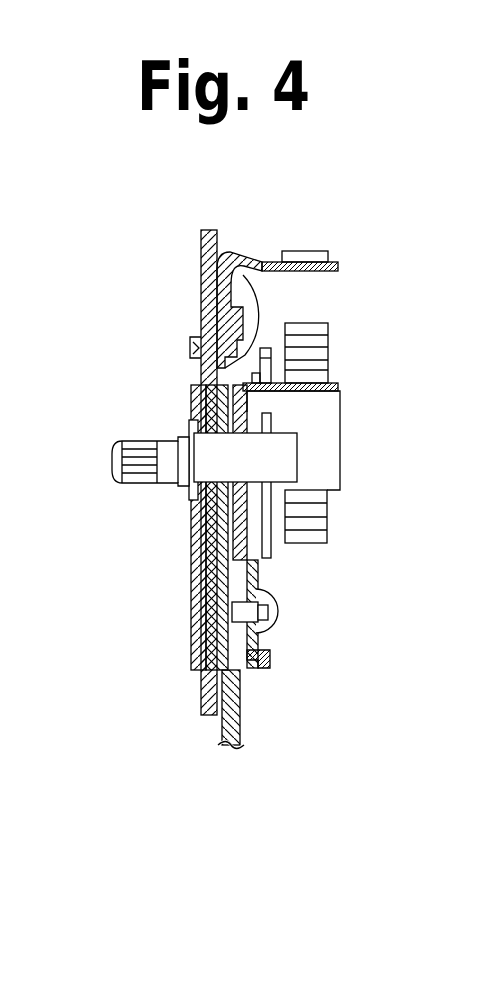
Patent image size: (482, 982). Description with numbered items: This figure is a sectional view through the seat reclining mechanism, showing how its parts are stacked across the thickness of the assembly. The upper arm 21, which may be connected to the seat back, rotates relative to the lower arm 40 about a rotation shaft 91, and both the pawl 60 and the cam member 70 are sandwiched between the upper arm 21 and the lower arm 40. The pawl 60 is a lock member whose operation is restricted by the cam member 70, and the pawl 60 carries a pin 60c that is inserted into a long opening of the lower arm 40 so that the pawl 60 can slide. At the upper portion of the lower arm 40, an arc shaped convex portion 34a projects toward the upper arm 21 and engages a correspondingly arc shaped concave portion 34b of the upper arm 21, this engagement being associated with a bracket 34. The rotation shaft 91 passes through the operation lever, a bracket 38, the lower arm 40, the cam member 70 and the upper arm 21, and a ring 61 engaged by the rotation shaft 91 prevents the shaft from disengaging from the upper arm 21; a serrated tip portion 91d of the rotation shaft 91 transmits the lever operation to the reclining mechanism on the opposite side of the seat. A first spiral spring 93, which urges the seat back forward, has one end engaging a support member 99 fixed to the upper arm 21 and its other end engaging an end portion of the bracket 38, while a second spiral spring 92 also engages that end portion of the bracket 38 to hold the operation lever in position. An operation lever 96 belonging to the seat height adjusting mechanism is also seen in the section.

The upper arm 21 is at (209, 246).
The bracket 34 is at (193, 347).
The convex portion 34a is at (260, 263).
The concave portion 34b is at (195, 352).
The support member 99 is at (307, 257).
The second spiral spring 92 is at (265, 348).
The cam member 70 is at (287, 367).
The first spiral spring 93 is at (325, 362).
The bracket 38 is at (337, 385).
The ring 61 is at (180, 421).
The rotation shaft 91 is at (288, 458).
The tip portion 91d is at (143, 470).
The pawl 60 is at (245, 672).
The pin 60c is at (250, 612).
The operation lever 96 is at (260, 662).
The lower arm 40 is at (230, 732).